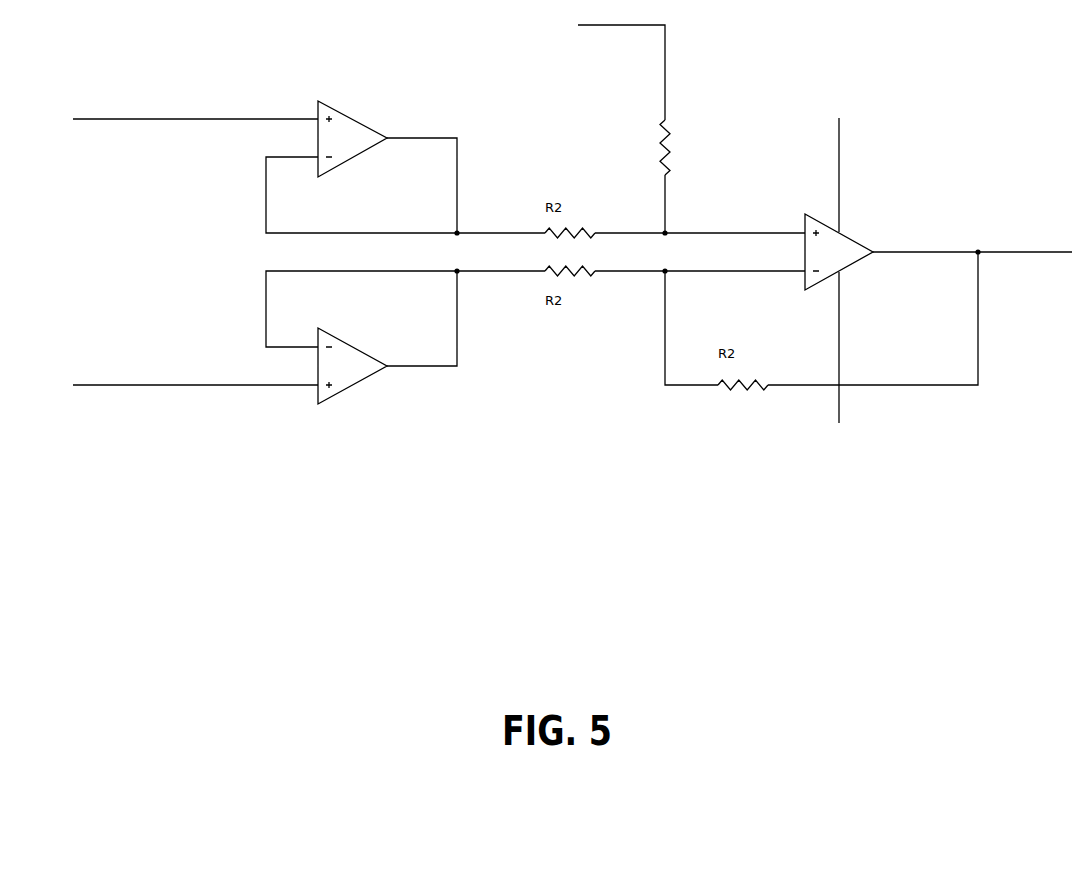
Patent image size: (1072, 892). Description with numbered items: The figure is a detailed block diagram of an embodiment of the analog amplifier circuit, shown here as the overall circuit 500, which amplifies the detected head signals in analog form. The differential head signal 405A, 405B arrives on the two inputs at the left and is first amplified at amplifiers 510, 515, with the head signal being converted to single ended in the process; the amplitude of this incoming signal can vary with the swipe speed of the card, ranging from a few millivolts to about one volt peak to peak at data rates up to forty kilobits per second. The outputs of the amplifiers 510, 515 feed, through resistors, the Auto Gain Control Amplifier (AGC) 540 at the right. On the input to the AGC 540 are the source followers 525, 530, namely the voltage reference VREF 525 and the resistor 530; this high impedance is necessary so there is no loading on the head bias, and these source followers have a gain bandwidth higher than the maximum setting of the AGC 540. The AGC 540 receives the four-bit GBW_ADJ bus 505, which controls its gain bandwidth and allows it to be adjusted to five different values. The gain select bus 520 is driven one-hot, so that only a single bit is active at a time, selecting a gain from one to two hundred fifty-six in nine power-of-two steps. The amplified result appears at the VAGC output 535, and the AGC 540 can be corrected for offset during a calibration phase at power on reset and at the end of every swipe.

The gain control circuit 500 is at (352, 552).
The GBW_ADJ bus 505 is at (838, 158).
The amplifier 510 is at (363, 122).
The amplifier 515 is at (355, 348).
The gain select bus 520 is at (825, 372).
The source follower (voltage reference VREF) 525 is at (621, 60).
The resistor 530 is at (693, 176).
The VAGC output 535 is at (972, 253).
The Auto Gain Control Amplifier (AGC) 540 is at (848, 240).
The differential head signal 405A is at (195, 122).
The differential head signal 405B is at (195, 389).